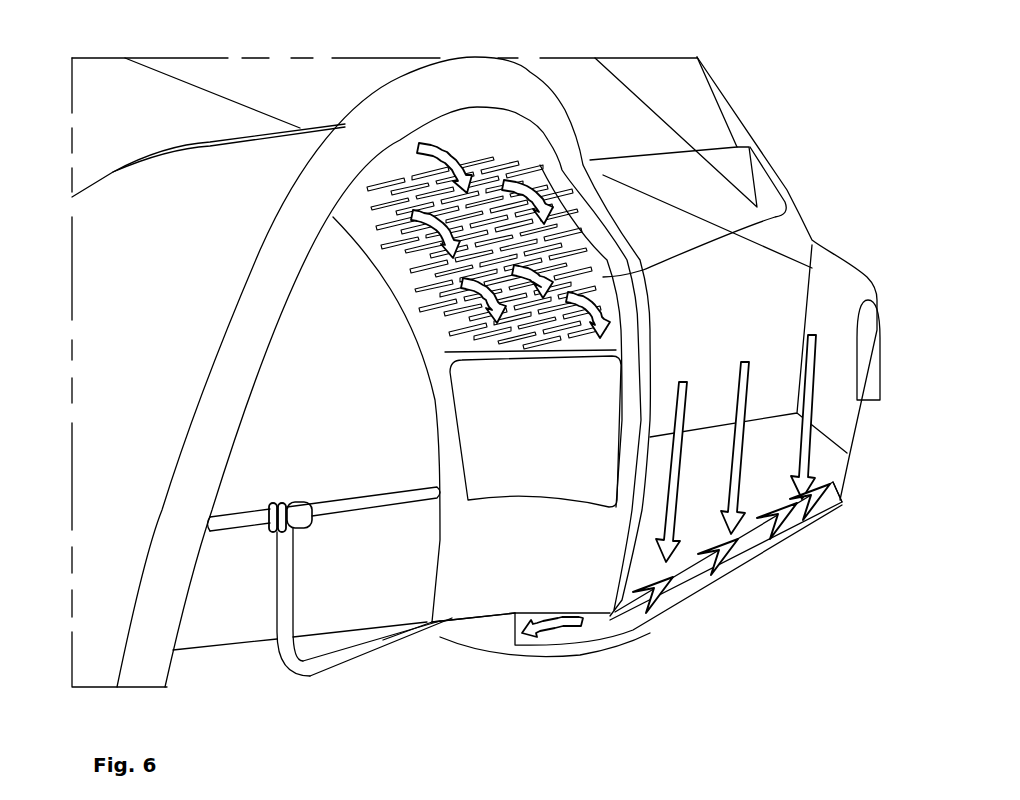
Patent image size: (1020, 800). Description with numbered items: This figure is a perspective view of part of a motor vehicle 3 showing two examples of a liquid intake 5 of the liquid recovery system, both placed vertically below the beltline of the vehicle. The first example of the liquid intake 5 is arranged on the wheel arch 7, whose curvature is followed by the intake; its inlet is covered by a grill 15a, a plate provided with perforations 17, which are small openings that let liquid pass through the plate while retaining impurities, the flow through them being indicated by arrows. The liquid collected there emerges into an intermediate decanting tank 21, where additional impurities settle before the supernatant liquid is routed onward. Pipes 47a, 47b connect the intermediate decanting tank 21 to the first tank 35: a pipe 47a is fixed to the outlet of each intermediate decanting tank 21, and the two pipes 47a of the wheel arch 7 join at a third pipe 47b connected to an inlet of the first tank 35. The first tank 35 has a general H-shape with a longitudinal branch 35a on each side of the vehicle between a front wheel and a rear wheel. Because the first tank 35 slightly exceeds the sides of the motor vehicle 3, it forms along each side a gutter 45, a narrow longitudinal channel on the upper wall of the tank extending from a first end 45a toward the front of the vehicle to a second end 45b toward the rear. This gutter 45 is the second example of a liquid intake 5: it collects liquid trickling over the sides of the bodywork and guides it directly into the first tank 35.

The motor vehicle 3 is at (677, 100).
The liquid intake 5 is at (587, 178).
The wheel arch 7 is at (337, 298).
The grill 15a is at (765, 224).
The perforations 17 is at (504, 220).
The intermediate decanting tank 21 is at (602, 453).
The first tank 35 is at (445, 630).
The longitudinal branch 35a is at (475, 630).
The gutter 45 is at (680, 615).
The first end 45a is at (563, 647).
The second end 45b is at (827, 513).
The pipe 47a is at (220, 528).
The third pipe 47b is at (352, 648).